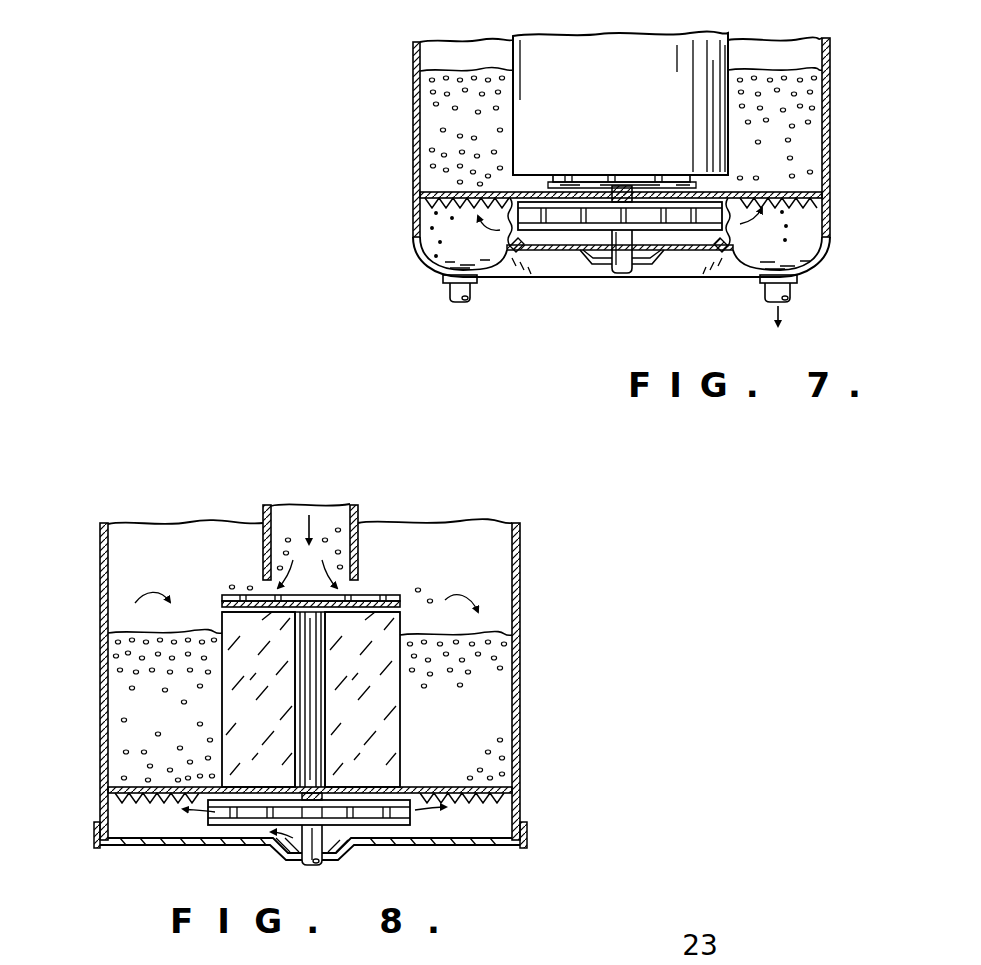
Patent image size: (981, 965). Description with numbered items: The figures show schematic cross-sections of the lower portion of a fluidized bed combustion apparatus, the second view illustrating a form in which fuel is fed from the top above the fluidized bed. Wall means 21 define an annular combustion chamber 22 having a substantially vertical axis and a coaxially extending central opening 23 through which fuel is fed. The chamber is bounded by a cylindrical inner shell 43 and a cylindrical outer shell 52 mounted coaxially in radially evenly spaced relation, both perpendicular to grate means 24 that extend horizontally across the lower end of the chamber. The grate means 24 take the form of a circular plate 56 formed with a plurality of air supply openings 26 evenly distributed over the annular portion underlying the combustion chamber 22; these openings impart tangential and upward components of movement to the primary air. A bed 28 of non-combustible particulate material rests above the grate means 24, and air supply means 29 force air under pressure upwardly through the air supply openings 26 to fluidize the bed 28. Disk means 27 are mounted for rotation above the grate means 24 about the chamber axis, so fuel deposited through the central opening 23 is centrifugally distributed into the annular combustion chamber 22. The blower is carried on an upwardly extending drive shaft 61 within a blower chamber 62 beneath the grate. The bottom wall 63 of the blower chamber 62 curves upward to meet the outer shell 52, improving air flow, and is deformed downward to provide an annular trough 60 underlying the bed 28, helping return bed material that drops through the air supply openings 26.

In FIG. 7, the wall means 21 is at (413, 71).
In FIG. 8, the wall means 21 is at (100, 597).
In FIG. 7, the annular combustion chamber 22 is at (446, 58).
In FIG. 8, the central opening 23 is at (330, 513).
In FIG. 7, the grate means 24 is at (444, 190).
In FIG. 8, the grate means 24 is at (134, 796).
In FIG. 7, the air supply openings 26 is at (800, 194).
In FIG. 7, the disk means 27 is at (654, 174).
In FIG. 8, the disk means 27 is at (404, 596).
In FIG. 7, the bed 28 is at (434, 160).
In FIG. 8, the bed 28 is at (505, 672).
In FIG. 7, the air supply means 29 is at (685, 230).
In FIG. 8, the air supply means 29 is at (393, 825).
In FIG. 7, the inner shell 43 is at (618, 104).
In FIG. 8, the inner shell 43 is at (390, 746).
In FIG. 7, the outer shell 52 is at (413, 123).
In FIG. 7, the circular plate 56 is at (762, 193).
In FIG. 7, the annular trough 60 is at (438, 258).
In FIG. 8, the drive shaft 61 is at (318, 864).
In FIG. 7, the blower chamber 62 is at (437, 225).
In FIG. 7, the bottom wall 63 is at (562, 253).